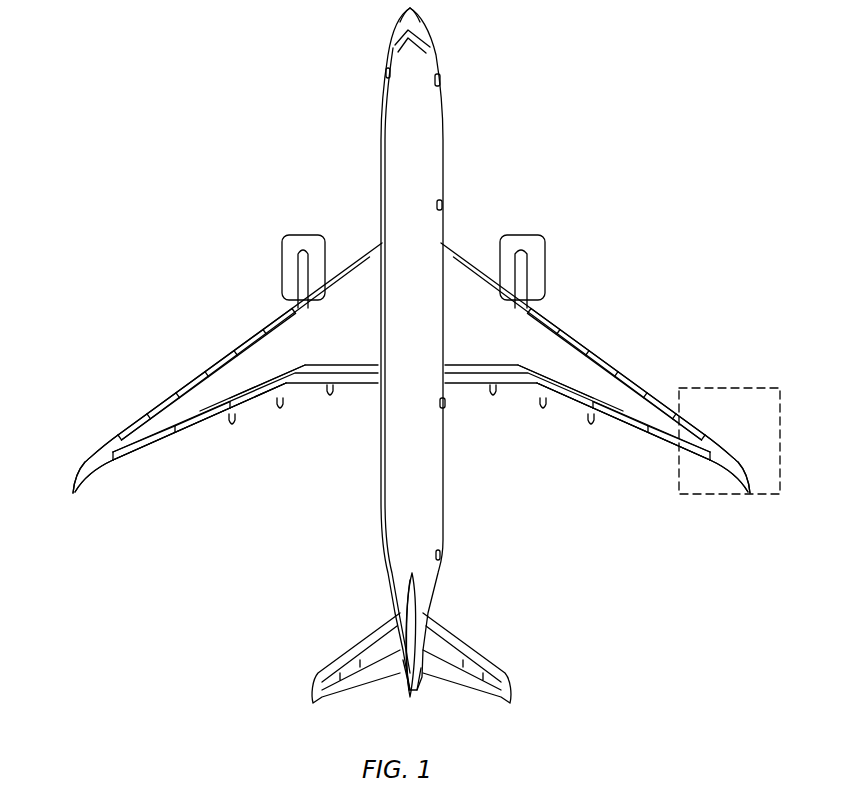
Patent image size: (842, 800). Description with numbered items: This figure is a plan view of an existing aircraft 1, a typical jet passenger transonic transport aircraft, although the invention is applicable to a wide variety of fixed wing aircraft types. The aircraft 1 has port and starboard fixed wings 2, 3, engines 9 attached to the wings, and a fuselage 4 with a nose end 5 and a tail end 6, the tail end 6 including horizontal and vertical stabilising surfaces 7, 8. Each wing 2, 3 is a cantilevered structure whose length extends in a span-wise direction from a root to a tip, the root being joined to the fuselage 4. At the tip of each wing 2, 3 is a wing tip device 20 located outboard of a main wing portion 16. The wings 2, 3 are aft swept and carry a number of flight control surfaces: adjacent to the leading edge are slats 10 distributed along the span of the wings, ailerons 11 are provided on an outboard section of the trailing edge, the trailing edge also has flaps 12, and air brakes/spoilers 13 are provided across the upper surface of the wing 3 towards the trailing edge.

The aircraft 1 is at (650, 216).
The port fixed wing 2 is at (237, 365).
The starboard fixed wing 3 is at (567, 358).
The fuselage 4 is at (423, 112).
The nose end 5 is at (407, 10).
The tail end 6 is at (418, 688).
The horizontal stabilising surface 7 is at (360, 653).
The vertical stabilising surface 8 is at (408, 595).
The engine 9 is at (303, 243).
The slat 10 is at (160, 400).
The aileron 11 is at (140, 445).
The flap 12 is at (215, 415).
The air brake/spoiler 13 is at (287, 387).
The main wing portion 16 is at (175, 410).
The wing tip device 20 is at (97, 458).